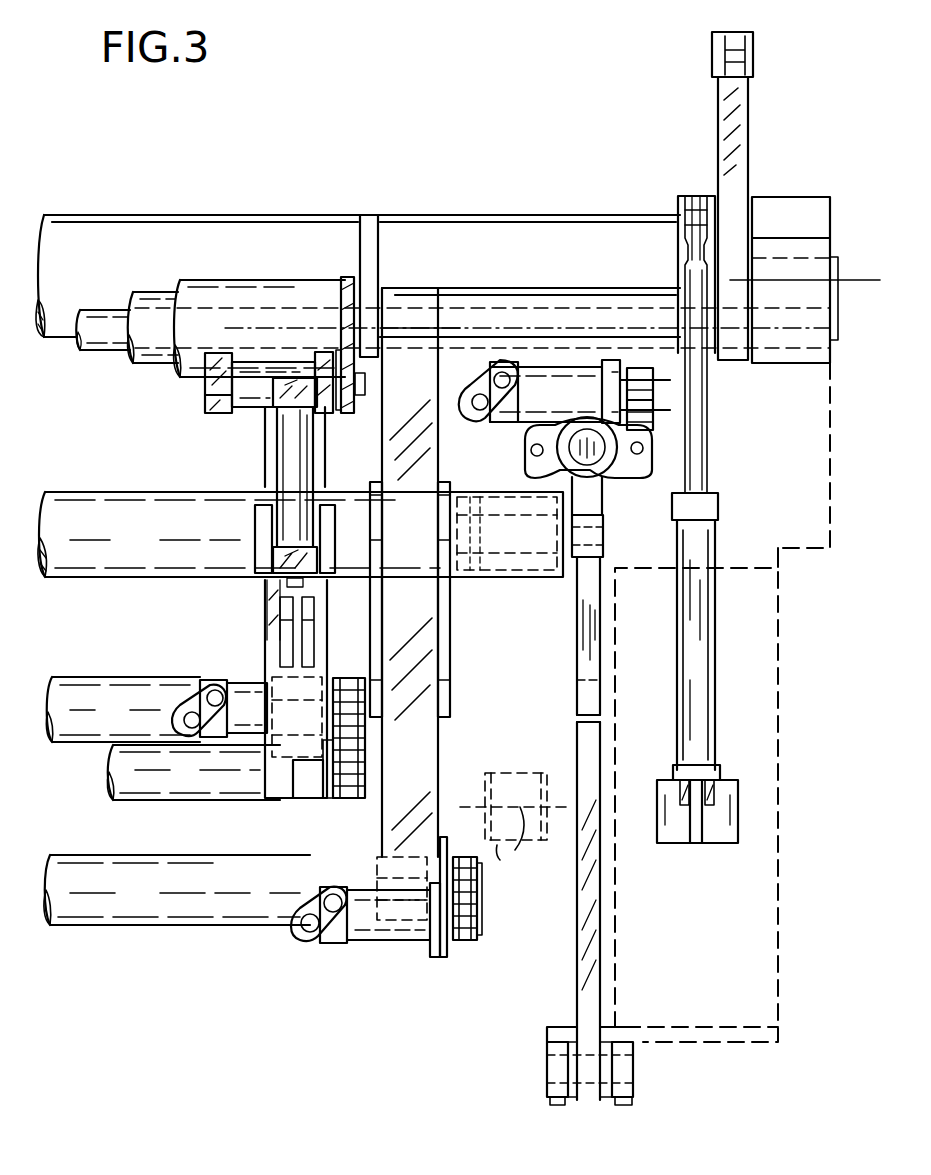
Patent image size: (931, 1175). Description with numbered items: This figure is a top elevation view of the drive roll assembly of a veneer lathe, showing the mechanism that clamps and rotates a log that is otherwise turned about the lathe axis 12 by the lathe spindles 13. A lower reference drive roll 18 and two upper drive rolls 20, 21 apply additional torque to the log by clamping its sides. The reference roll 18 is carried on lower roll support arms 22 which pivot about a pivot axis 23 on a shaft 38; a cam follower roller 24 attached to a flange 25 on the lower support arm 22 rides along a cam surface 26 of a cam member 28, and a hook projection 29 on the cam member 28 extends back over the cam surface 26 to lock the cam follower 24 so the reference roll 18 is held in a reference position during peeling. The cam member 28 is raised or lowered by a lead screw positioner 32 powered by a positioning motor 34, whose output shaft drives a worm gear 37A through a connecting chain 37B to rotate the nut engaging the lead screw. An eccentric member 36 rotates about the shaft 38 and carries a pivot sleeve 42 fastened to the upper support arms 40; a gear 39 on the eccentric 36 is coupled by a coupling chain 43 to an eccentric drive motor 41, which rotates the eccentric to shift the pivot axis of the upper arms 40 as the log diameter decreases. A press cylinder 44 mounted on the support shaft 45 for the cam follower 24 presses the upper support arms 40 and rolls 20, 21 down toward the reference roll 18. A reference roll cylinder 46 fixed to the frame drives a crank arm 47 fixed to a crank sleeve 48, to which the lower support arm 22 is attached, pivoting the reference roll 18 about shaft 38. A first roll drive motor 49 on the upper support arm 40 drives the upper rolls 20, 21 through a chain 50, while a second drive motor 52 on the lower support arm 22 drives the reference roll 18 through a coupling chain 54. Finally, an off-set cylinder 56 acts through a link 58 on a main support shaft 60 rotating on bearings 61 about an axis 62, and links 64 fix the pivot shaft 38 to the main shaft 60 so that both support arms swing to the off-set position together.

The lathe axis 12 is at (520, 840).
The lathe spindles 13 is at (497, 855).
The lower reference drive roll 18 is at (135, 905).
The upper drive roll 20 is at (160, 790).
The upper drive roll 21 is at (100, 695).
The lower roll support arms 22 is at (440, 762).
The pivot axis 23 is at (477, 328).
The cam follower roller 24 is at (577, 575).
The flange 25 is at (450, 607).
The cam surface 26 is at (598, 790).
The cam member 28 is at (572, 655).
The hook projection 29 is at (580, 700).
The lead screw positioner 32 is at (522, 433).
The positioning motor 34 is at (552, 372).
The eccentric member 36 is at (150, 300).
The worm gear 37A is at (653, 420).
The connecting chain 37B is at (652, 395).
The shaft 38 is at (100, 312).
The gear 39 is at (350, 280).
The upper support arms 40 is at (268, 615).
The eccentric drive motor 41 is at (213, 385).
The pivot sleeve 42 is at (205, 283).
The coupling chain 43 is at (352, 415).
The press cylinder 44 is at (280, 437).
The support shaft 45 is at (125, 495).
The reference roll cylinder 46 is at (688, 668).
The crank arm 47 is at (675, 238).
The crank sleeve 48 is at (522, 290).
The first roll drive motor 49 is at (245, 700).
The chain 50 is at (350, 690).
The second drive motor 52 is at (390, 935).
The coupling chain 54 is at (465, 945).
The off-set cylinder 56 is at (713, 45).
The link 58 is at (718, 122).
The main support shaft 60 is at (295, 215).
The bearings 61 is at (800, 245).
The axis 62 is at (66, 268).
The links 64 is at (378, 250).